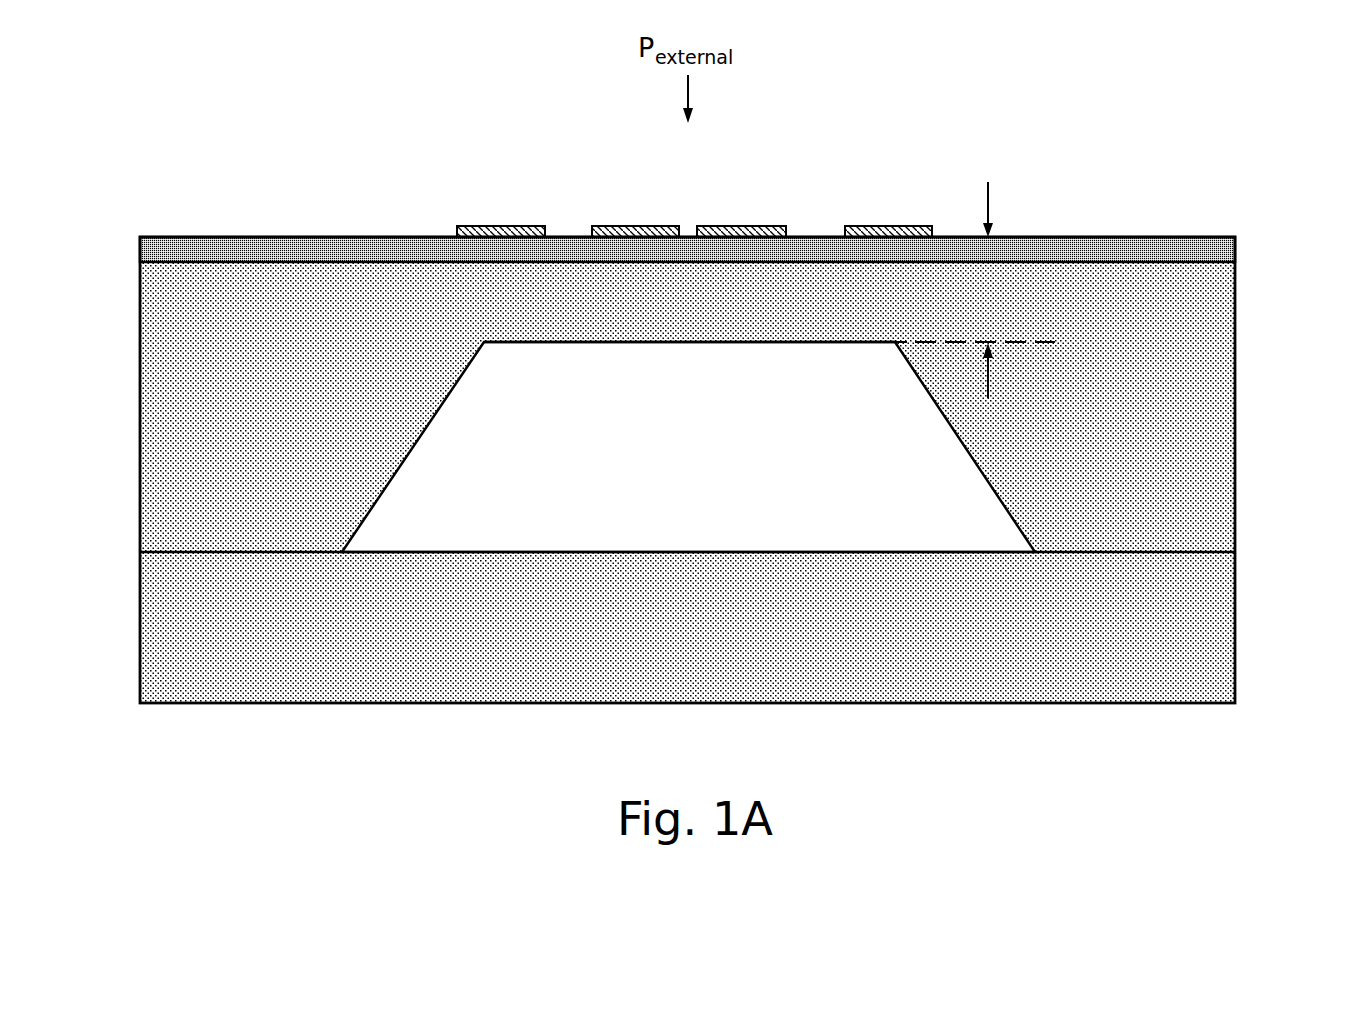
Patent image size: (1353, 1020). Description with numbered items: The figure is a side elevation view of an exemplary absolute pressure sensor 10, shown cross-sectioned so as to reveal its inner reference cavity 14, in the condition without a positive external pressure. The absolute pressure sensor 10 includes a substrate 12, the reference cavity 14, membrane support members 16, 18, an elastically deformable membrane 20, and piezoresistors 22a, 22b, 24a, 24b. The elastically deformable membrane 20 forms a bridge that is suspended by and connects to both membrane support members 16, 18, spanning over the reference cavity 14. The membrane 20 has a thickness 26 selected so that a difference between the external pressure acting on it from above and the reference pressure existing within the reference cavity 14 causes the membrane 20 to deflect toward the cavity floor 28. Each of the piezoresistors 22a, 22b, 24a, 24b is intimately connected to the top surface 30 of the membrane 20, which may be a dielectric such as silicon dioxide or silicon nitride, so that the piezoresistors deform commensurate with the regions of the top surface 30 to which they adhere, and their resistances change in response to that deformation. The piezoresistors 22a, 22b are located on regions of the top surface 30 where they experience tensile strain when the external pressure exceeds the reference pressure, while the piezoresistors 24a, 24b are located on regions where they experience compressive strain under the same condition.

The absolute pressure sensor 10 is at (1140, 110).
The substrate 12 is at (192, 627).
The reference cavity 14 is at (490, 486).
The membrane support member 16 is at (181, 446).
The membrane support member 18 is at (1172, 475).
The elastically deformable membrane 20 is at (587, 302).
The piezoresistor 22a is at (492, 226).
The piezoresistor 22b is at (877, 226).
The piezoresistor 24a is at (625, 226).
The piezoresistor 24b is at (730, 226).
The thickness 26 is at (975, 290).
The cavity floor 28 is at (891, 552).
The top surface 30 is at (240, 237).